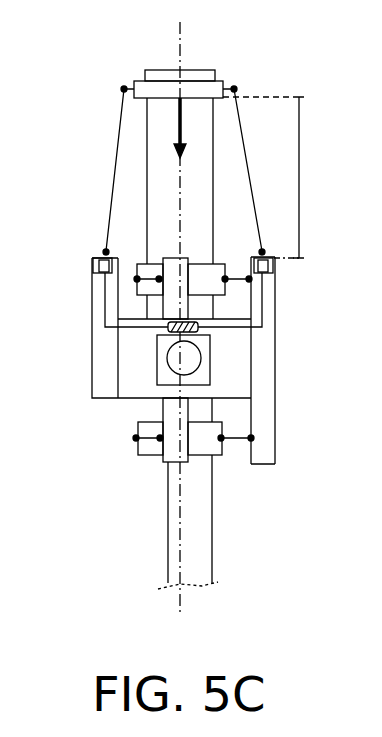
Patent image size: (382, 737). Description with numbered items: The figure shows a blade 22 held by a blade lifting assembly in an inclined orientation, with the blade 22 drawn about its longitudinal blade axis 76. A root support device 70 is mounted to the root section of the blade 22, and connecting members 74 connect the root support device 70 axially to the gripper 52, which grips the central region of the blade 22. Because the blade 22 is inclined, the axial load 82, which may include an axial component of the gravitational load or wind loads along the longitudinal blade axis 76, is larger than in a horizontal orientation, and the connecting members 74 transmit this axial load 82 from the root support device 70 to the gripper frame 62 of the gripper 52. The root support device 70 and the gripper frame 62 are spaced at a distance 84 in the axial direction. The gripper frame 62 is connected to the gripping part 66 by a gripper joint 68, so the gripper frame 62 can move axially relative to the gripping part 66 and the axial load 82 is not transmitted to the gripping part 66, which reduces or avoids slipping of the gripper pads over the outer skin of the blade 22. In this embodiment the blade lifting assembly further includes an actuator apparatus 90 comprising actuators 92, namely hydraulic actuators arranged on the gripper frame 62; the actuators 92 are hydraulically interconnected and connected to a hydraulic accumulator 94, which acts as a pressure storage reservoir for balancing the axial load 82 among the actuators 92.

The blade 22 is at (168, 528).
The gripper 52 is at (88, 340).
The gripper frame 62 is at (275, 380).
The gripping part 66 is at (137, 264).
The gripper joint 68 is at (232, 440).
The root support device 70 is at (215, 81).
The connecting members 74 is at (112, 193).
The longitudinal blade axis 76 is at (180, 608).
The axial load 82 is at (178, 120).
The distance 84 is at (299, 176).
The actuator apparatus 90 is at (265, 299).
The actuators 92 is at (88, 270).
The hydraulic accumulator 94 is at (168, 330).